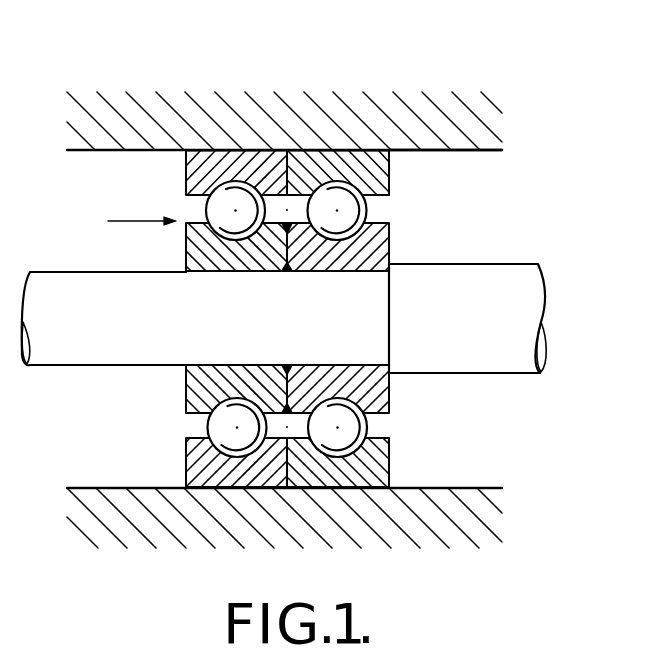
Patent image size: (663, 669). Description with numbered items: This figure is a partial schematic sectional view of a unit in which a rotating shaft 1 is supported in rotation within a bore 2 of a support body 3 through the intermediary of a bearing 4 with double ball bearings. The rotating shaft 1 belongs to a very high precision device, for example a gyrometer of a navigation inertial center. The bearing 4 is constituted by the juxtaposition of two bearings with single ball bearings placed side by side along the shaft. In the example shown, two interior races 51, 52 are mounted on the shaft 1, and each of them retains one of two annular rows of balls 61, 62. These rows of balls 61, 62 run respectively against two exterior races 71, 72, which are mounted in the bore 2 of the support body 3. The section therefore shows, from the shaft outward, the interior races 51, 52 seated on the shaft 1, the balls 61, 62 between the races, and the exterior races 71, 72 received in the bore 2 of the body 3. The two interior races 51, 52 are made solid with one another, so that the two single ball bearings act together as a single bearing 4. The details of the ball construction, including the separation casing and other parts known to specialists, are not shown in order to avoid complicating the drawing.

The rotating shaft 1 is at (475, 276).
The bore 2 is at (471, 175).
The support body 3 is at (118, 139).
The bearing with double ball bearings 4 is at (130, 224).
The first interior race 51 is at (218, 255).
The second interior race 52 is at (358, 248).
The first annular row of balls 61 is at (218, 210).
The second annular row of balls 62 is at (349, 212).
The first exterior race 71 is at (220, 163).
The second exterior race 72 is at (334, 161).